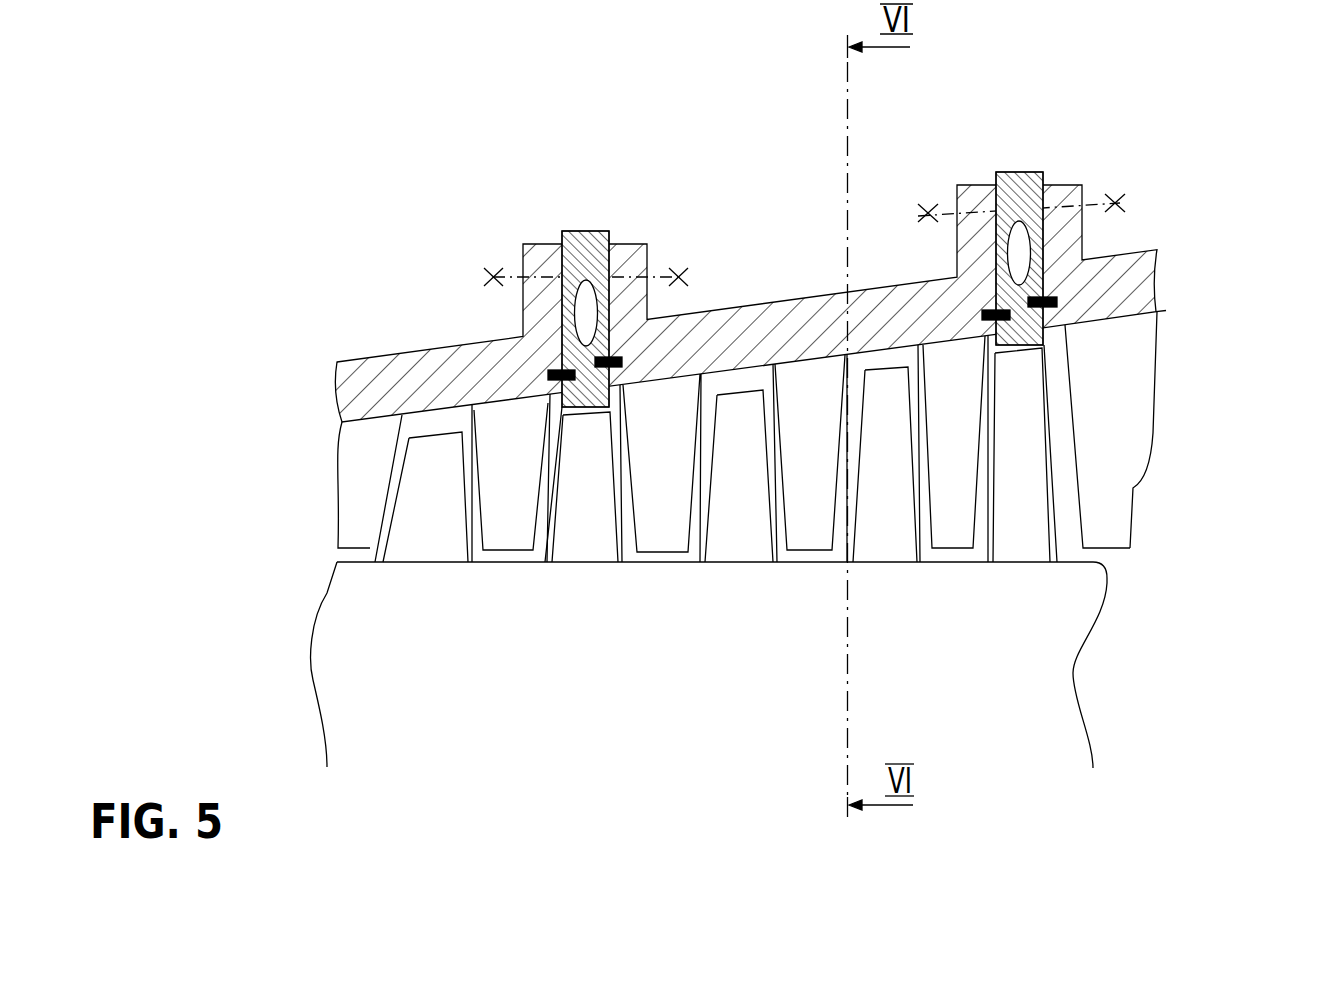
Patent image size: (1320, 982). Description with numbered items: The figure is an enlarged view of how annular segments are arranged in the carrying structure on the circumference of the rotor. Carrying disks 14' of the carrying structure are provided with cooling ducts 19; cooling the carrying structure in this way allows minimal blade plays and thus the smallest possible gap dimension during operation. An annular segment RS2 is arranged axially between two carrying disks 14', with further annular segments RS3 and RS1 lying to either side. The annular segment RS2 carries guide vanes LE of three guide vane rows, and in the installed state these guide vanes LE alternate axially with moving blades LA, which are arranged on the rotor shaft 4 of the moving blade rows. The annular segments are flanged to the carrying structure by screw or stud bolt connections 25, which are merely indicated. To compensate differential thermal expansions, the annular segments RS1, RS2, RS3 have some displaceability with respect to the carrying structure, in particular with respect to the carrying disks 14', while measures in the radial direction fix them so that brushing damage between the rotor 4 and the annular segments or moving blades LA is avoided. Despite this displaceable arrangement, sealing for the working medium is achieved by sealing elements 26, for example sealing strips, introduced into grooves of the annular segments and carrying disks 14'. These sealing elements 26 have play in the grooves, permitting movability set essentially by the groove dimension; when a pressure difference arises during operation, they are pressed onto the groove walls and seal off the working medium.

The rotor shaft 4 is at (675, 747).
The carrying disk 14' is at (807, 242).
The cooling duct 19 is at (843, 212).
The screw or stud bolt connection 25 is at (493, 277).
The sealing element 26 is at (558, 372).
The annular segment RS1 is at (1142, 204).
The annular segment RS2 is at (875, 288).
The annular segment RS3 is at (371, 362).
The moving blade LA is at (453, 528).
The guide vane LE is at (532, 463).